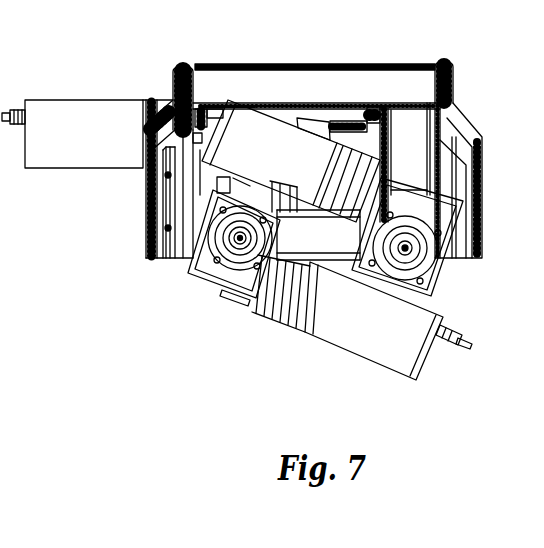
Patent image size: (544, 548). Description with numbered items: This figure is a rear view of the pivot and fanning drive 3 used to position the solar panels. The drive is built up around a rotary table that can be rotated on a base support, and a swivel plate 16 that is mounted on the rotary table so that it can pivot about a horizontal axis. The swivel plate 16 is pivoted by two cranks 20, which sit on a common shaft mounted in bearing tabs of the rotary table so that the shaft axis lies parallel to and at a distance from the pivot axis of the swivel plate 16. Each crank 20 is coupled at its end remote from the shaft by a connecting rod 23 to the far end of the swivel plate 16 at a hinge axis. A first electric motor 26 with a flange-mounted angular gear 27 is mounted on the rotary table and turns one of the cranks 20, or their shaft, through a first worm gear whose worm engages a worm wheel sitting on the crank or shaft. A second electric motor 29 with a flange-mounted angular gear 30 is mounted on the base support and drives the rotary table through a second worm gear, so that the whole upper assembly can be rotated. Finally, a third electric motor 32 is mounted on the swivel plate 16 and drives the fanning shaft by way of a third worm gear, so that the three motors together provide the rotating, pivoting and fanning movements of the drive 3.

The pivot and fanning drive 3 is at (218, 362).
The swivel plate 16 is at (407, 90).
The crank 20 is at (175, 235).
The connecting rod 23 is at (152, 185).
The first electric motor 26 is at (233, 150).
The angular gear 27 is at (466, 222).
The second electric motor 29 is at (337, 334).
The angular gear 30 is at (212, 282).
The third electric motor 32 is at (75, 160).